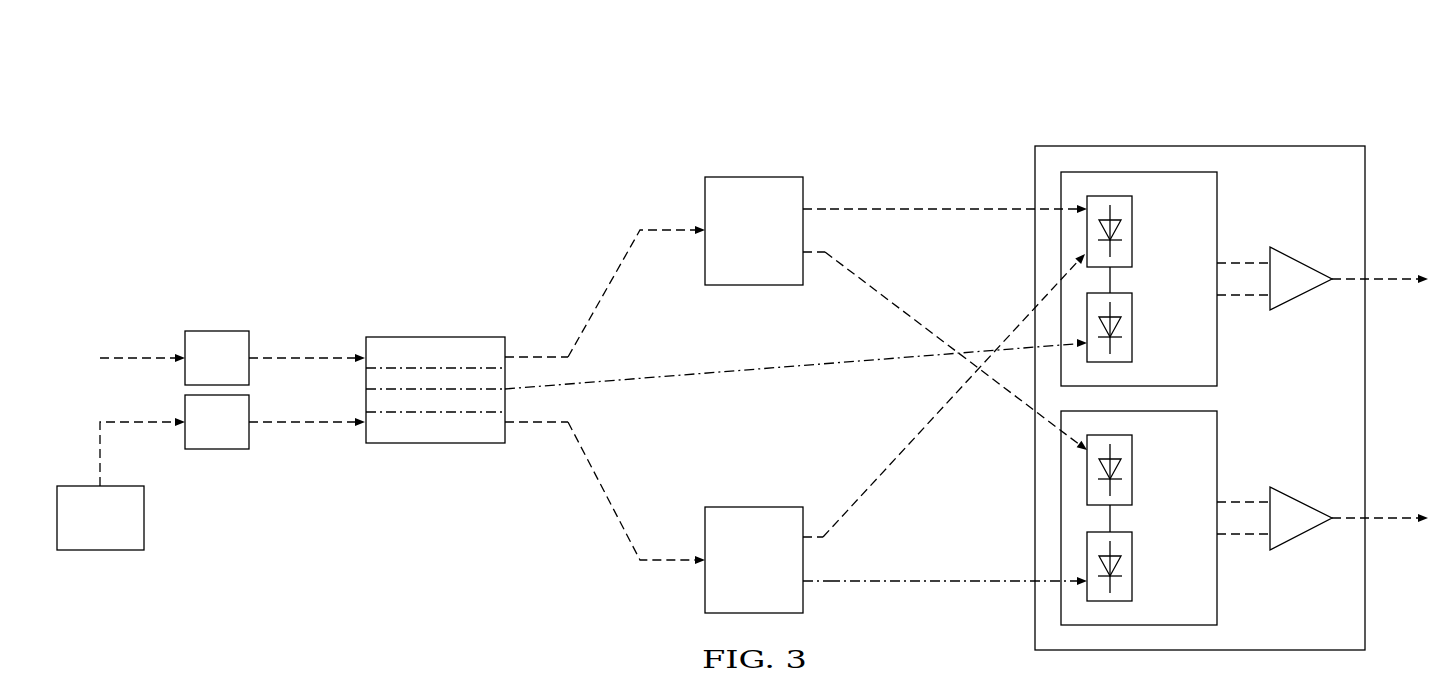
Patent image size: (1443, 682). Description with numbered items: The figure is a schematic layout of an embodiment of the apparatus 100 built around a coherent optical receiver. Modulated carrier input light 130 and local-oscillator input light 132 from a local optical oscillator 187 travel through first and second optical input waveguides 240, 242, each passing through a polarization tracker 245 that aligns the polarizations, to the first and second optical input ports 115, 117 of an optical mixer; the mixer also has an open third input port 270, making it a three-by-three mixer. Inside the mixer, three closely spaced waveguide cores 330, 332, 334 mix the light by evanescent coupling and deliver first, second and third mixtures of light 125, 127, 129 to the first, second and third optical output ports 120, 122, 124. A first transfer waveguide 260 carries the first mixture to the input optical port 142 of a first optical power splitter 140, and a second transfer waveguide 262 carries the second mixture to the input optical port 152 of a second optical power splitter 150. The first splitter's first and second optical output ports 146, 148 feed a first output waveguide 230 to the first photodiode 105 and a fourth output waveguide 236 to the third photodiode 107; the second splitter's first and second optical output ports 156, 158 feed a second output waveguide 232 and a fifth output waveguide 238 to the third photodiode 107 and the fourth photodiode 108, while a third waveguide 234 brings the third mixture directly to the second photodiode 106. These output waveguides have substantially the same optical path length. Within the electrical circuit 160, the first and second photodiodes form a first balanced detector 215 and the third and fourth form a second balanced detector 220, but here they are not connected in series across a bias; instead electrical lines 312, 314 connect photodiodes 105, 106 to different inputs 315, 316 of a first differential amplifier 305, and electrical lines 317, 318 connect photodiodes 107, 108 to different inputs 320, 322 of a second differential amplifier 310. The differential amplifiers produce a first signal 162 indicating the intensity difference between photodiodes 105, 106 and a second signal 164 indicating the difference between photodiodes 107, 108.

The apparatus 100 is at (500, 98).
The first photodiode 105 is at (400, 330).
The second photodiode 106 is at (1133, 325).
The third photodiode 107 is at (1133, 470).
The fourth photodiode 108 is at (1133, 573).
The first optical input port 115 is at (364, 350).
The second optical input port 117 is at (364, 428).
The first optical output port 120 is at (508, 352).
The second optical output port 122 is at (508, 429).
The third optical output port 124 is at (508, 381).
The first mixture of light 125 is at (543, 354).
The second mixture of light 127 is at (545, 424).
The third mixture of light 129 is at (545, 390).
The input light 130 is at (128, 356).
The input light 132 is at (128, 420).
The first optical power splitter 140 is at (774, 246).
The input optical port 142 is at (703, 222).
The first optical output port 146 is at (806, 205).
The second optical output port 148 is at (808, 243).
The second optical power splitter 150 is at (774, 576).
The input optical port 152 is at (703, 570).
The first optical output port 156 is at (806, 532).
The second optical output port 158 is at (806, 585).
The electrical circuit 160 is at (1252, 137).
The first signal 162 is at (1390, 278).
The second signal 164 is at (1385, 520).
The local optical oscillator 187 is at (121, 535).
The first balanced detector 215 is at (1197, 370).
The second balanced detector 220 is at (1198, 452).
The first output waveguide 230 is at (932, 207).
The second output waveguide 232 is at (922, 430).
The third waveguide 234 is at (797, 365).
The fourth output waveguide 236 is at (912, 318).
The fifth output waveguide 238 is at (928, 584).
The first optical input waveguide 240 is at (298, 356).
The second optical input waveguide 242 is at (298, 420).
The polarization tracker 245 is at (237, 372).
The first transfer waveguide 260 is at (614, 278).
The second transfer waveguide 262 is at (612, 505).
The third input port 270 is at (364, 390).
The first differential amplifier 305 is at (1305, 296).
The second differential amplifier 310 is at (1310, 533).
The electrical line 312 is at (1244, 262).
The electrical line 314 is at (1244, 296).
The input of first differential amplifier 315 is at (1275, 262).
The input of first differential amplifier 316 is at (1280, 298).
The electrical line 317 is at (1244, 501).
The electrical line 318 is at (1244, 536).
The input of second differential amplifier 320 is at (1275, 501).
The input of second differential amplifier 322 is at (1280, 538).
The waveguide core 330 is at (420, 368).
The waveguide core 332 is at (422, 390).
The waveguide core 334 is at (470, 413).